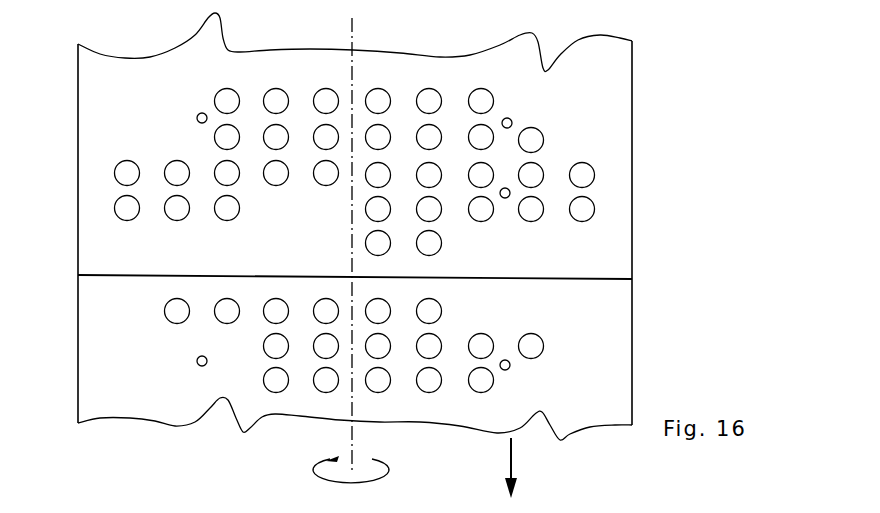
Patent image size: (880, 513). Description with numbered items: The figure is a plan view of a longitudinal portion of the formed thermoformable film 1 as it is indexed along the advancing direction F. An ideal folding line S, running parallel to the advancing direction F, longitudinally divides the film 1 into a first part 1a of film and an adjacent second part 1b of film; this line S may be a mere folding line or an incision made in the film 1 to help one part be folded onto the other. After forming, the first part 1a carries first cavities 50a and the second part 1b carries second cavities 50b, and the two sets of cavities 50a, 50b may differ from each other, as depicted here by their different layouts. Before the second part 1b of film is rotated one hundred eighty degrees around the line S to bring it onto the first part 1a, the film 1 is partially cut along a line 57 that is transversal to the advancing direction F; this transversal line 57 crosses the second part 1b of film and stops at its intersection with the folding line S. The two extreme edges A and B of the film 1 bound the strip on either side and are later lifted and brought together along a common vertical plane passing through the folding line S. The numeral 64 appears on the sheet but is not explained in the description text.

The thermoformable film material 1 is at (674, 90).
The first part of film 1a is at (610, 263).
The second part of film 1b is at (100, 249).
The first cavities 50a is at (583, 178).
The second cavities 50b is at (122, 174).
The transversal cut line 57 is at (120, 276).
The extreme edge of film A is at (632, 325).
The extreme edge of film B is at (78, 133).
The folding line S is at (352, 443).
The advancing direction F is at (521, 468).
The element 64 is at (609, 509).